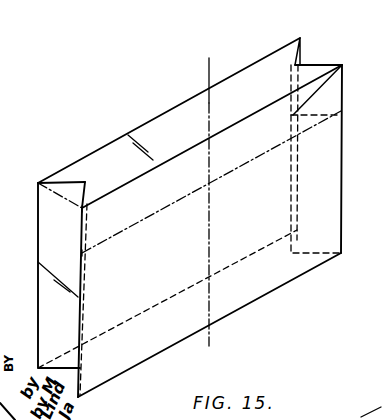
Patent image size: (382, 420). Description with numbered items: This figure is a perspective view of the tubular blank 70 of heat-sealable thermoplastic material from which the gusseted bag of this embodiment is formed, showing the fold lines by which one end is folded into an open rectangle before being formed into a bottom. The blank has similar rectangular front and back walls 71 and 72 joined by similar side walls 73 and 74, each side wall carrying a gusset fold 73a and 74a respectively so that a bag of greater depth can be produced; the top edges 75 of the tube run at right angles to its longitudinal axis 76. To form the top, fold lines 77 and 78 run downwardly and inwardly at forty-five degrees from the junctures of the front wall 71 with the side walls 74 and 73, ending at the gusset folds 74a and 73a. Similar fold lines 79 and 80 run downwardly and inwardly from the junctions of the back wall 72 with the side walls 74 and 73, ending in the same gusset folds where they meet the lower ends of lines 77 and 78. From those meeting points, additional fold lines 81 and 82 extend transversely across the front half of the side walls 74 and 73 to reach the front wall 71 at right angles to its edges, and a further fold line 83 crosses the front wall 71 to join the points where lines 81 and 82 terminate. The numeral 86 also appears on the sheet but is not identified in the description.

The tubular blank 70 is at (280, 296).
The front wall 71 is at (256, 236).
The back wall 72 is at (127, 177).
The side wall 73 is at (63, 325).
The gusset fold 73a is at (87, 183).
The side wall 74 is at (331, 193).
The gusset fold 74a is at (293, 88).
The top edges 75 is at (189, 149).
The longitudinal axis 76 is at (209, 59).
The fold line 77 is at (320, 95).
The fold line 78 is at (91, 213).
The fold line 79 is at (302, 62).
The fold line 80 is at (67, 211).
The fold line 81 is at (334, 120).
The fold line 82 is at (89, 259).
The fold line 83 is at (151, 215).
The adjacent figure element 86 is at (356, 412).